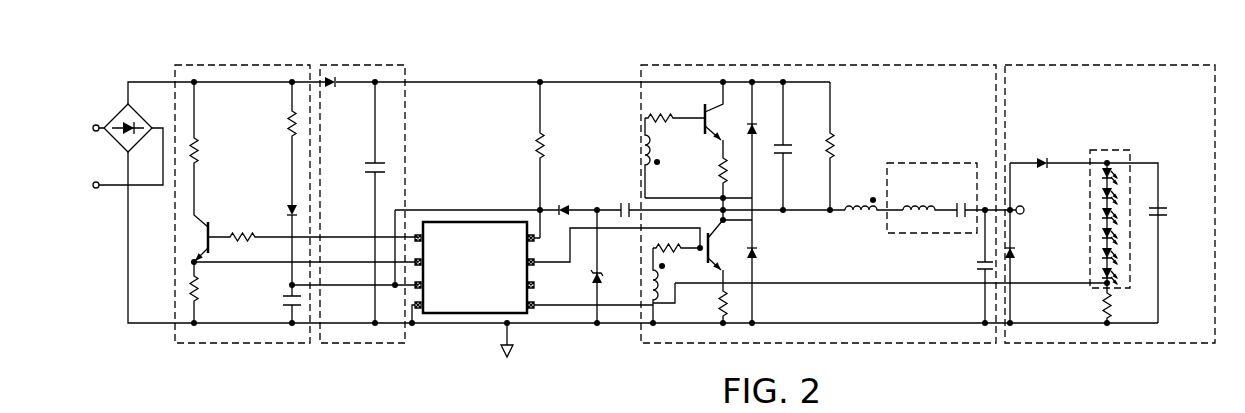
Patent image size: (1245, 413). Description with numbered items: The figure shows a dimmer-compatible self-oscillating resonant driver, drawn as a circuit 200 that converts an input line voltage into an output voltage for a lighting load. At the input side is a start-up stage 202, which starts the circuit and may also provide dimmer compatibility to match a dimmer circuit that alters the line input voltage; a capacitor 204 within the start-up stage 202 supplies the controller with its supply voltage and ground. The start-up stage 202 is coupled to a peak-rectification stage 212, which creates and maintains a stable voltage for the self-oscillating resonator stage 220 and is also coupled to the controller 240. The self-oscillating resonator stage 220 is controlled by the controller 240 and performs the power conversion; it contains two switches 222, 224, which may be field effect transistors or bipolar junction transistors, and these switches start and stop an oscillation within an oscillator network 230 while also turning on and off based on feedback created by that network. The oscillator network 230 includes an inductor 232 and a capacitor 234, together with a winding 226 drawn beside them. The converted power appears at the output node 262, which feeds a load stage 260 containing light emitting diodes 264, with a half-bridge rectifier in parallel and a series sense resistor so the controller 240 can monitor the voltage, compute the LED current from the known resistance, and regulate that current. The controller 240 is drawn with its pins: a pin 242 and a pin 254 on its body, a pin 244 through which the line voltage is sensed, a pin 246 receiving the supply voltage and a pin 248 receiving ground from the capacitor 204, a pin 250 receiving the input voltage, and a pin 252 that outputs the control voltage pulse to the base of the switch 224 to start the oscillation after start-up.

The circuit 200 is at (86, 55).
The start-up stage 202 is at (301, 63).
The capacitor 204 is at (285, 307).
The peak-rectification stage 212 is at (346, 63).
The self-oscillating resonator stage 220 is at (668, 63).
The switch 222 is at (703, 121).
The switch 224 is at (707, 256).
The resonant inductor winding 226 is at (853, 222).
The oscillator network 230 is at (931, 162).
The inductor 232 is at (913, 222).
The capacitor 234 is at (957, 220).
The controller 240 is at (492, 315).
The BC pin 242 is at (420, 233).
The pin 244 is at (416, 259).
The pin 246 is at (416, 282).
The pin 248 is at (419, 309).
The pin 250 is at (530, 234).
The pin 252 is at (536, 264).
The VSNS2 pin 254 is at (528, 314).
The load stage 260 is at (1025, 63).
The output node 262 is at (1024, 214).
The light emitting diodes 264 is at (1113, 150).